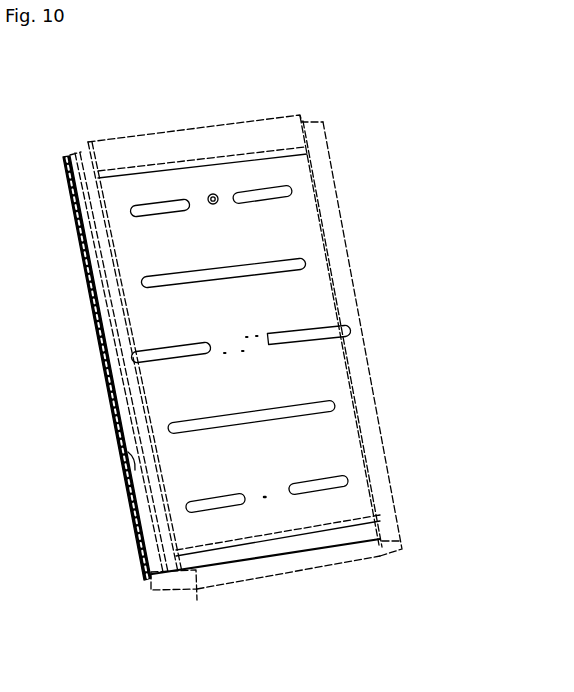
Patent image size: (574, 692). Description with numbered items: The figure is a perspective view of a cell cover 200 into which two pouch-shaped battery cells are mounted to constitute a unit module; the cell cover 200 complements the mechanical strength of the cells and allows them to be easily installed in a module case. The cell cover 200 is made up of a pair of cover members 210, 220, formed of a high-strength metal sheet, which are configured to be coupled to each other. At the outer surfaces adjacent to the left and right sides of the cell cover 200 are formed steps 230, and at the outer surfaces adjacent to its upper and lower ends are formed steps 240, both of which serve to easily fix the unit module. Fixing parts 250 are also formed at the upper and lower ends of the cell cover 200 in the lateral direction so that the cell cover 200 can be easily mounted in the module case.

The cell cover 200 is at (194, 305).
The cover member 210 is at (195, 600).
The cover member 220 is at (271, 578).
The step 230 is at (123, 452).
The step 240 is at (227, 138).
The fixing part 250 is at (356, 514).